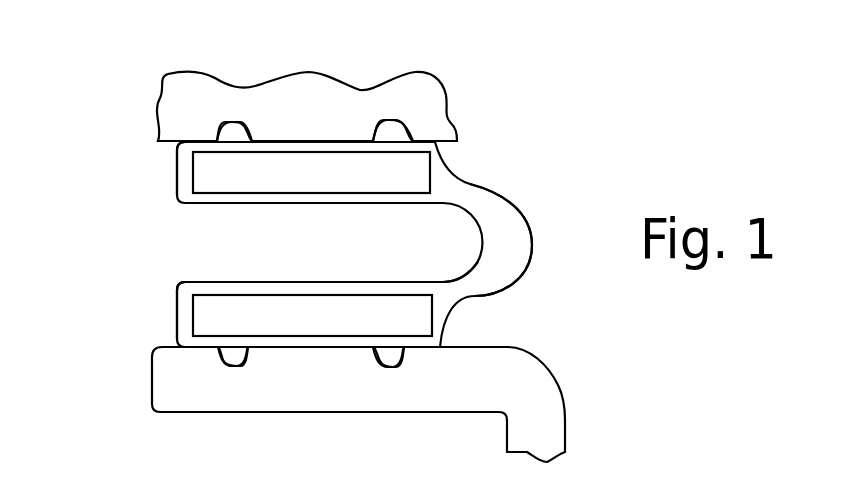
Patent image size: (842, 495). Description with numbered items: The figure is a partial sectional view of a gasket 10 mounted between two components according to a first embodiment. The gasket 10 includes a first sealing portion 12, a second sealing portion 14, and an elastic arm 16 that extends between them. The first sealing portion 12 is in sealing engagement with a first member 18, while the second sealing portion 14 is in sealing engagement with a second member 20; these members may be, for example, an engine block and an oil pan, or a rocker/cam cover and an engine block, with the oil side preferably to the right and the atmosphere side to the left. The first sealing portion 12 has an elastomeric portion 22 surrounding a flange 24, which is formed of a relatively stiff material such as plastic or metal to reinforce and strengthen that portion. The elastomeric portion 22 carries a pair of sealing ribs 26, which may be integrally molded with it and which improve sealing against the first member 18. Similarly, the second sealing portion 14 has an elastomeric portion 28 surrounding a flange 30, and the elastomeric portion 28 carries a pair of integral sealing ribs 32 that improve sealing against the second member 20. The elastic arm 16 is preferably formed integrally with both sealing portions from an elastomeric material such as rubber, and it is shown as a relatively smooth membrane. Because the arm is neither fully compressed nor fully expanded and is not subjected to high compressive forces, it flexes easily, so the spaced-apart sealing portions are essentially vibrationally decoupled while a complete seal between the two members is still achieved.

The gasket 10 is at (538, 173).
The first sealing portion 12 is at (128, 161).
The second sealing portion 14 is at (133, 317).
The elastic arm 16 is at (531, 252).
The first member 18 is at (441, 84).
The second member 20 is at (563, 392).
The elastomeric portion 22 is at (177, 185).
The flange 24 is at (257, 193).
The sealing ribs 26 is at (381, 120).
The elastomeric portion 28 is at (177, 301).
The flange 30 is at (300, 296).
The sealing ribs 32 is at (234, 364).